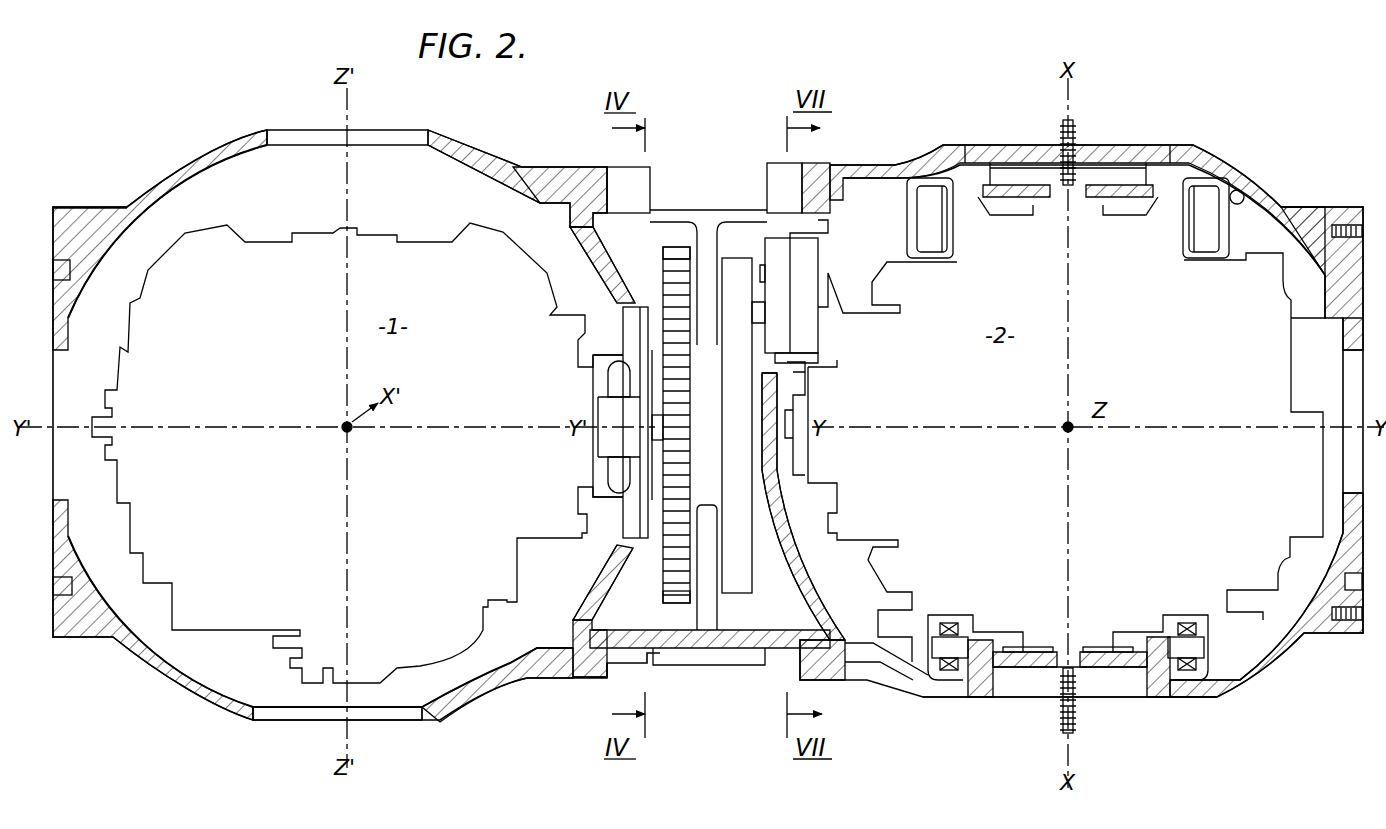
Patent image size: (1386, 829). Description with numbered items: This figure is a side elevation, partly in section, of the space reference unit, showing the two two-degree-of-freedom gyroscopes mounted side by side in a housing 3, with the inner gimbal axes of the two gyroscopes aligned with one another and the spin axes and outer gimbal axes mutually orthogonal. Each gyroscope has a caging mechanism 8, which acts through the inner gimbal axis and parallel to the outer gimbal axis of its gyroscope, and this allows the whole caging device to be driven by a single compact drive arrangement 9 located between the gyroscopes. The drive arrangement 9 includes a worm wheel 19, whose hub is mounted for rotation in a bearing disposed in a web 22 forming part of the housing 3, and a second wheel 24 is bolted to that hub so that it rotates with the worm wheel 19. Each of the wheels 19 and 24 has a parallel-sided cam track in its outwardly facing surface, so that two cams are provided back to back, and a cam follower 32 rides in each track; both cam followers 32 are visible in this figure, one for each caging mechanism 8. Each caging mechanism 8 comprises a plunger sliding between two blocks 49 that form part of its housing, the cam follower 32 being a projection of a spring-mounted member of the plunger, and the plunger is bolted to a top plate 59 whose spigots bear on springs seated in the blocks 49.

The housing 3 is at (471, 152).
The caging mechanism 8 is at (590, 453).
The drive arrangement 9 is at (676, 238).
The worm wheel 19 is at (663, 265).
The web 22 is at (708, 608).
The second wheel 24 is at (735, 275).
The cam follower 32 is at (757, 313).
The blocks 49 is at (620, 375).
The top plate 59 is at (607, 435).